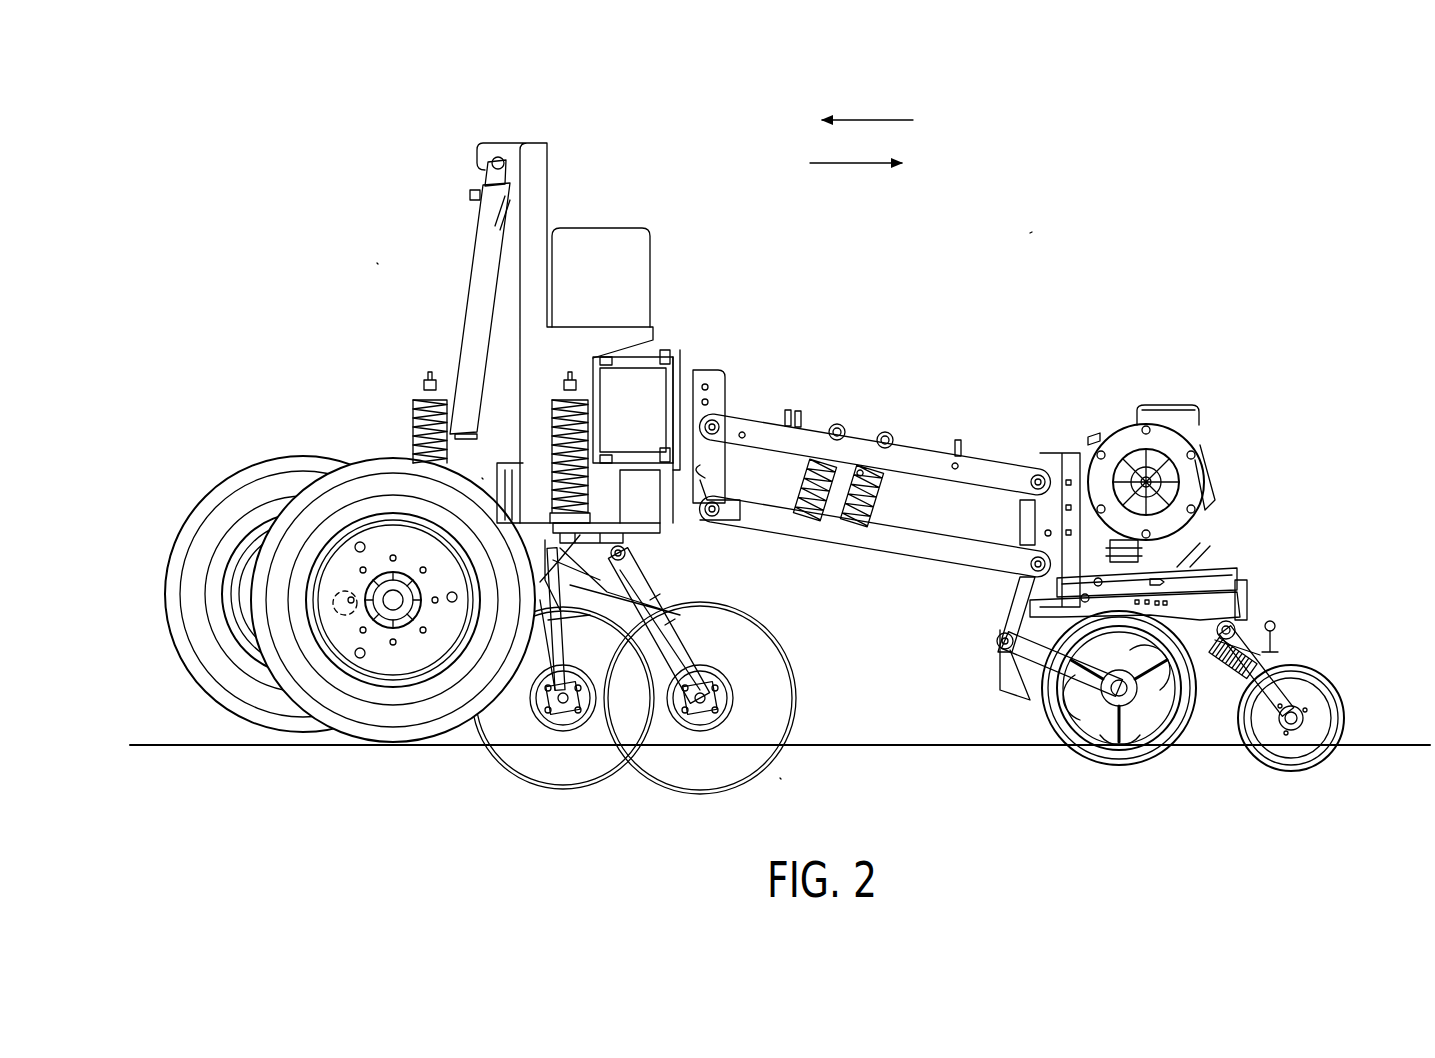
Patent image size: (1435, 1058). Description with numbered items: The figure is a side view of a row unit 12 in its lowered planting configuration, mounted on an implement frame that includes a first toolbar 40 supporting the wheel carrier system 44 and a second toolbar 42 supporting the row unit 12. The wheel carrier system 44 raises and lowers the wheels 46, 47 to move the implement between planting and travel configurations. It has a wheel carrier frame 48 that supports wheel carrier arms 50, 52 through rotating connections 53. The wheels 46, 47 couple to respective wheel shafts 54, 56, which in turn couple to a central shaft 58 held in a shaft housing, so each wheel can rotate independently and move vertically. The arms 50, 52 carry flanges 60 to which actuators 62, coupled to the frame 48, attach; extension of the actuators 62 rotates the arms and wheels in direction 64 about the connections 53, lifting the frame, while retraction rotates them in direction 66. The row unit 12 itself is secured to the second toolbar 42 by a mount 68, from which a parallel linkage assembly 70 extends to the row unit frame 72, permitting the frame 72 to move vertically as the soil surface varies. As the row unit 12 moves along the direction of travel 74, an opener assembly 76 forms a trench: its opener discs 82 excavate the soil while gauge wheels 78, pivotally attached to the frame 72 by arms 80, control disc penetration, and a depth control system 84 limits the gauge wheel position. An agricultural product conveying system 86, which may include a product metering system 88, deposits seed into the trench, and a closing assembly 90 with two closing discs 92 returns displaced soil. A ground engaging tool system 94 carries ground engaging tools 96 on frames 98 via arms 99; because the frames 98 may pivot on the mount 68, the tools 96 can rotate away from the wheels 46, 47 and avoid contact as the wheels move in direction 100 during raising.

The row unit 12 is at (1038, 228).
The first toolbar 40 is at (598, 263).
The second toolbar 42 is at (652, 378).
The wheel carrier system 44 is at (365, 260).
The wheel 46 is at (393, 606).
The wheel 47 is at (240, 505).
The wheel carrier frame 48 is at (547, 343).
The wheel carrier arm 50 is at (530, 665).
The wheel carrier arm 52 is at (640, 455).
The rotating connection 53 is at (737, 545).
The wheel shaft 54 is at (390, 630).
The wheel shaft 56 is at (297, 597).
The central shaft 58 is at (340, 615).
The flange 60 is at (484, 468).
The actuator 62 is at (493, 232).
The direction 64 is at (730, 575).
The direction 66 is at (598, 545).
The mount 68 is at (700, 386).
The linkage assembly 70 is at (940, 400).
The row unit frame 72 is at (1252, 556).
The direction of travel 74 is at (868, 120).
The opener assembly 76 is at (1094, 726).
The gauge wheel 78 is at (1152, 715).
The arm 80 is at (1048, 707).
The opener disc 82 is at (1142, 762).
The depth control system 84 is at (1306, 716).
The agricultural product conveying system 86 is at (1195, 383).
The product metering system 88 is at (1122, 440).
The closing assembly 90 is at (1368, 722).
The closing disc 92 is at (1300, 770).
The ground engaging tool system 94 is at (788, 782).
The ground engaging tool 96 is at (538, 760).
The frame 98 is at (517, 460).
The arm 99 is at (575, 702).
The direction 100 is at (855, 163).